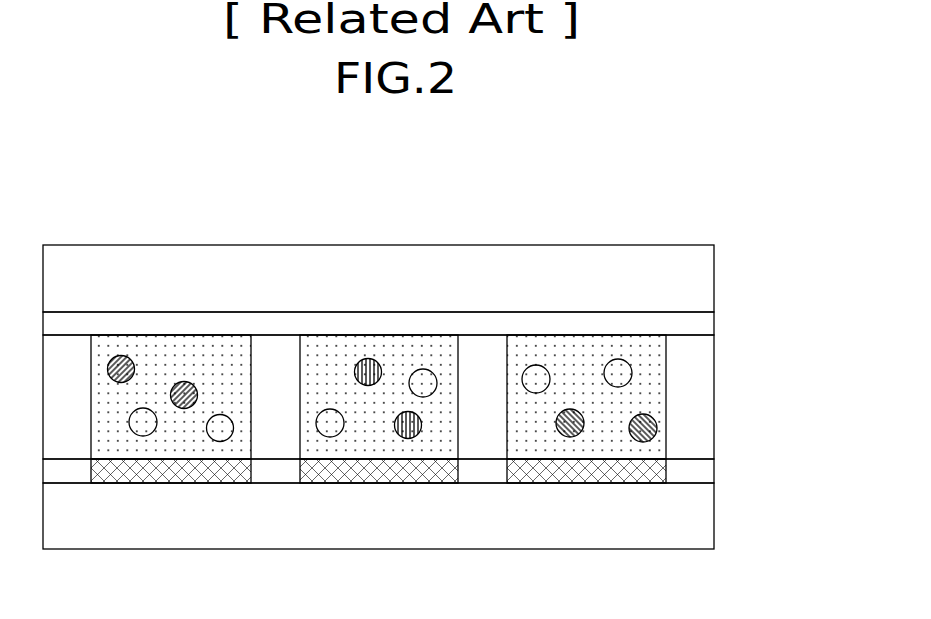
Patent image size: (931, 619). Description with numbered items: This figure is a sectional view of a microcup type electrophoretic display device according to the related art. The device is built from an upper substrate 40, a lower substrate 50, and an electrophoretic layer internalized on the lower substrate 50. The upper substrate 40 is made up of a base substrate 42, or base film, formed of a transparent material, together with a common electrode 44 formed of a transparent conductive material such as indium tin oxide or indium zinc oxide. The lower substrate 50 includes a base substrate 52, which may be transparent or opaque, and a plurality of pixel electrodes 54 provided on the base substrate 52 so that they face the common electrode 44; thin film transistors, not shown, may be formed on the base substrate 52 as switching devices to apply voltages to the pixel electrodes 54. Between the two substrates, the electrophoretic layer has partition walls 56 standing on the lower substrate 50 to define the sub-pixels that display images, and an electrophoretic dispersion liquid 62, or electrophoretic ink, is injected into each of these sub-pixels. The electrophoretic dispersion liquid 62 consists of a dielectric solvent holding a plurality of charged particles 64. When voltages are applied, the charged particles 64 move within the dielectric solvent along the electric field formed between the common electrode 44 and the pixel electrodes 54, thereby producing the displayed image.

The upper substrate 40 is at (436, 290).
The base substrate 42 is at (708, 257).
The common electrode 44 is at (708, 324).
The lower substrate 50 is at (436, 504).
The base substrate 52 is at (790, 468).
The pixel electrodes 54 is at (655, 470).
The partition walls 56 is at (708, 432).
The electrophoretic dispersion liquid 62 is at (655, 355).
The charged particles 64 is at (656, 425).